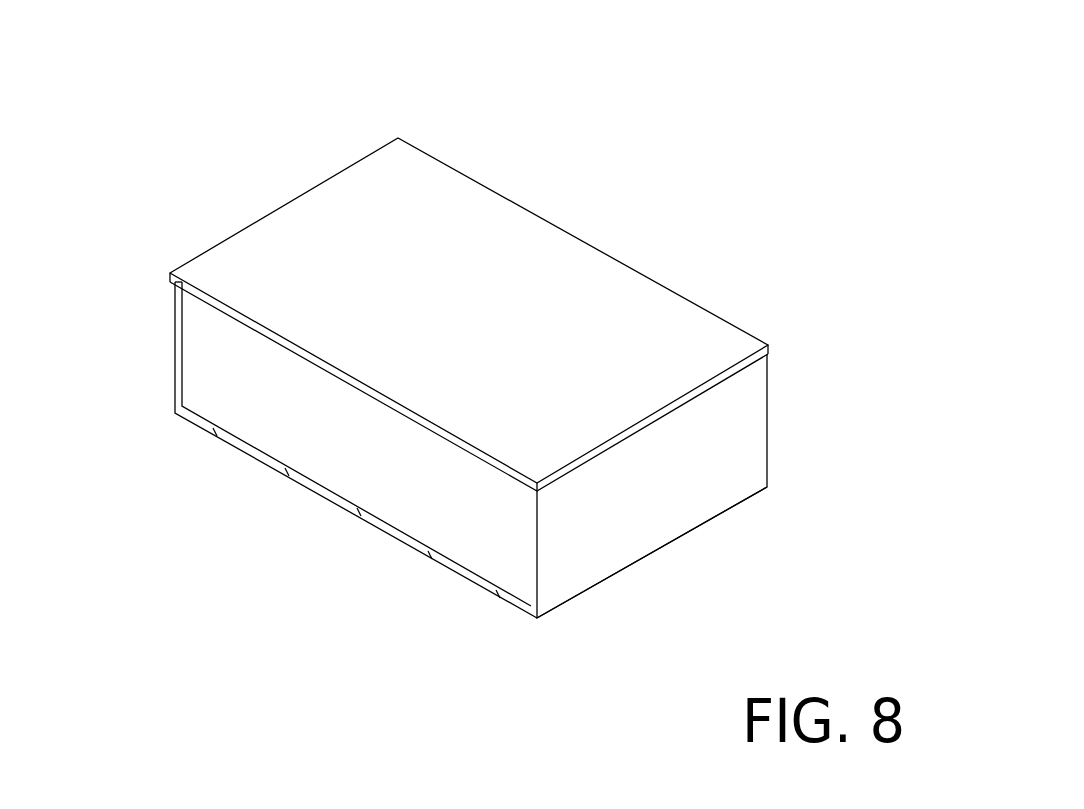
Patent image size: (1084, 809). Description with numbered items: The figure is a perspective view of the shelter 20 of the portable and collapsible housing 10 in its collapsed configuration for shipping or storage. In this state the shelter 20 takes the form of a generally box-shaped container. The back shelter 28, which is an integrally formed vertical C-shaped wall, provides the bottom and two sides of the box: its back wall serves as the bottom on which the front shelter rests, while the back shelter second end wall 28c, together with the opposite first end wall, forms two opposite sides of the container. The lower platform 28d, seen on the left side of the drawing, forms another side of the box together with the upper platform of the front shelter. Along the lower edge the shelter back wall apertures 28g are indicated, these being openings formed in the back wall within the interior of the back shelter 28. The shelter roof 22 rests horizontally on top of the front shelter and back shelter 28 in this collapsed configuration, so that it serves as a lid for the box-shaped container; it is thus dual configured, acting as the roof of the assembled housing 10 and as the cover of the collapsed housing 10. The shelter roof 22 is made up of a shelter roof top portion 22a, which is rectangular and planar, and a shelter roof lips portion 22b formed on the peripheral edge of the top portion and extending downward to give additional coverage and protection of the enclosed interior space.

The portable and collapsible housing 10 is at (279, 90).
The shelter 20 is at (838, 345).
The shelter roof 22 is at (588, 240).
The shelter roof top portion 22a is at (427, 177).
The shelter roof lips portion 22b is at (190, 288).
The back shelter 28 is at (769, 421).
The back shelter second end wall 28c is at (643, 540).
The lower platform 28d is at (197, 388).
The shelter back wall apertures 28g is at (497, 594).